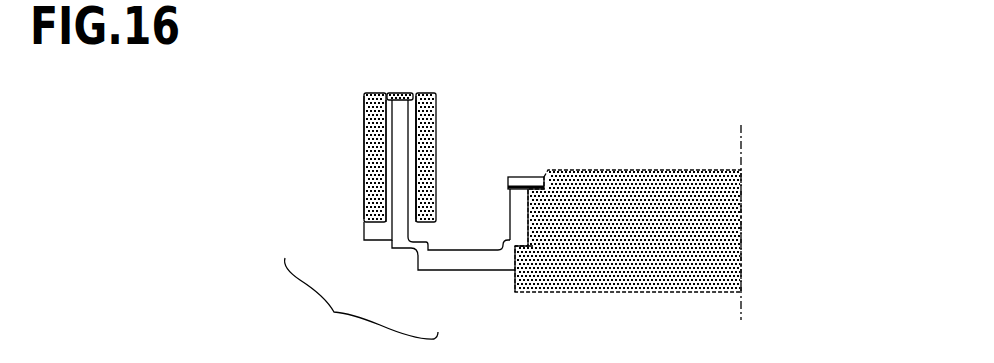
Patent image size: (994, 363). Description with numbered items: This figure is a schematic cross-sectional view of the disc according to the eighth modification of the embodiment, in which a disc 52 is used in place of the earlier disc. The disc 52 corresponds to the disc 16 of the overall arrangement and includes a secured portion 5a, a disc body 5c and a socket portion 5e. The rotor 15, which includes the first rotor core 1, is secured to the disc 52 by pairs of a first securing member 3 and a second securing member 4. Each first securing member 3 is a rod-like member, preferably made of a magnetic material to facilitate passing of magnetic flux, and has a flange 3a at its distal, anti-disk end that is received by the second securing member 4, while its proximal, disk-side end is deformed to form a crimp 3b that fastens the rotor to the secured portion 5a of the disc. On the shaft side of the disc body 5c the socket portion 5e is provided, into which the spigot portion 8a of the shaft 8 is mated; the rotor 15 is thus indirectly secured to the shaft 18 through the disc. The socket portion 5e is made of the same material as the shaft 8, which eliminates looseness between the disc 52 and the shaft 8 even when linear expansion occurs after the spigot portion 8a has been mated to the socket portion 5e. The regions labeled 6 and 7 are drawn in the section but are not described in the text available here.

The rotor 15 is at (292, 113).
The first rotor core 1 is at (412, 152).
The first securing member 3 is at (384, 168).
The flange 3a is at (402, 93).
The crimp 3b is at (413, 234).
The second securing member 4 is at (417, 95).
The outer sleeve 6 is at (377, 199).
The right insulating member 7 is at (440, 167).
The secured portion 5a is at (380, 230).
The disc body 5c is at (428, 258).
The socket portion 5e is at (517, 266).
The spigot portion 8a is at (528, 213).
The shaft 8 is at (565, 250).
The shaft 18 is at (628, 231).
The disc 52 is at (345, 305).
The disc 16 is at (361, 298).